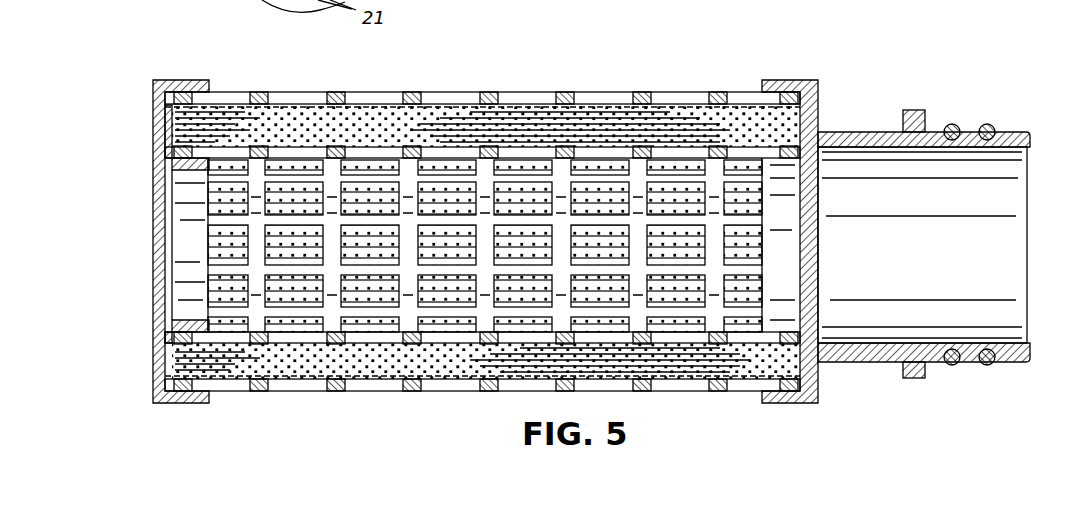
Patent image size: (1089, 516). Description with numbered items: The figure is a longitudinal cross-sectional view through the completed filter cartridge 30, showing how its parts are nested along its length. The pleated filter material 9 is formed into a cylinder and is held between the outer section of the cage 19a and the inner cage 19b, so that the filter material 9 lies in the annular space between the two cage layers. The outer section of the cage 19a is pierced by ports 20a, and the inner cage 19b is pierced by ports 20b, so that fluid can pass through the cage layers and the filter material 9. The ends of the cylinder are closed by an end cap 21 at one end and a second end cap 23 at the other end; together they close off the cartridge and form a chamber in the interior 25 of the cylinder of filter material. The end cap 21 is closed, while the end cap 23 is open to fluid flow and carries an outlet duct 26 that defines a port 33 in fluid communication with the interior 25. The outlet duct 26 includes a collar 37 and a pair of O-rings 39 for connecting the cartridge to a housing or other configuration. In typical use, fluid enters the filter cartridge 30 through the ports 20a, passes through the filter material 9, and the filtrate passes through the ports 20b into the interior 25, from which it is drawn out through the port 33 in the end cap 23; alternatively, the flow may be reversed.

The filter material 9 is at (601, 97).
The outer section of the cage 19a is at (668, 93).
The inner cage 19b is at (718, 150).
The ports 20a is at (508, 97).
The ports 20b is at (373, 193).
The end cap 21 is at (153, 198).
The end cap 23 is at (820, 113).
The interior 25 is at (200, 245).
The outlet duct 26 is at (1022, 131).
The filter cartridge 30 is at (830, 52).
The port 33 is at (848, 260).
The collar 37 is at (916, 112).
The O-rings 39 is at (987, 123).